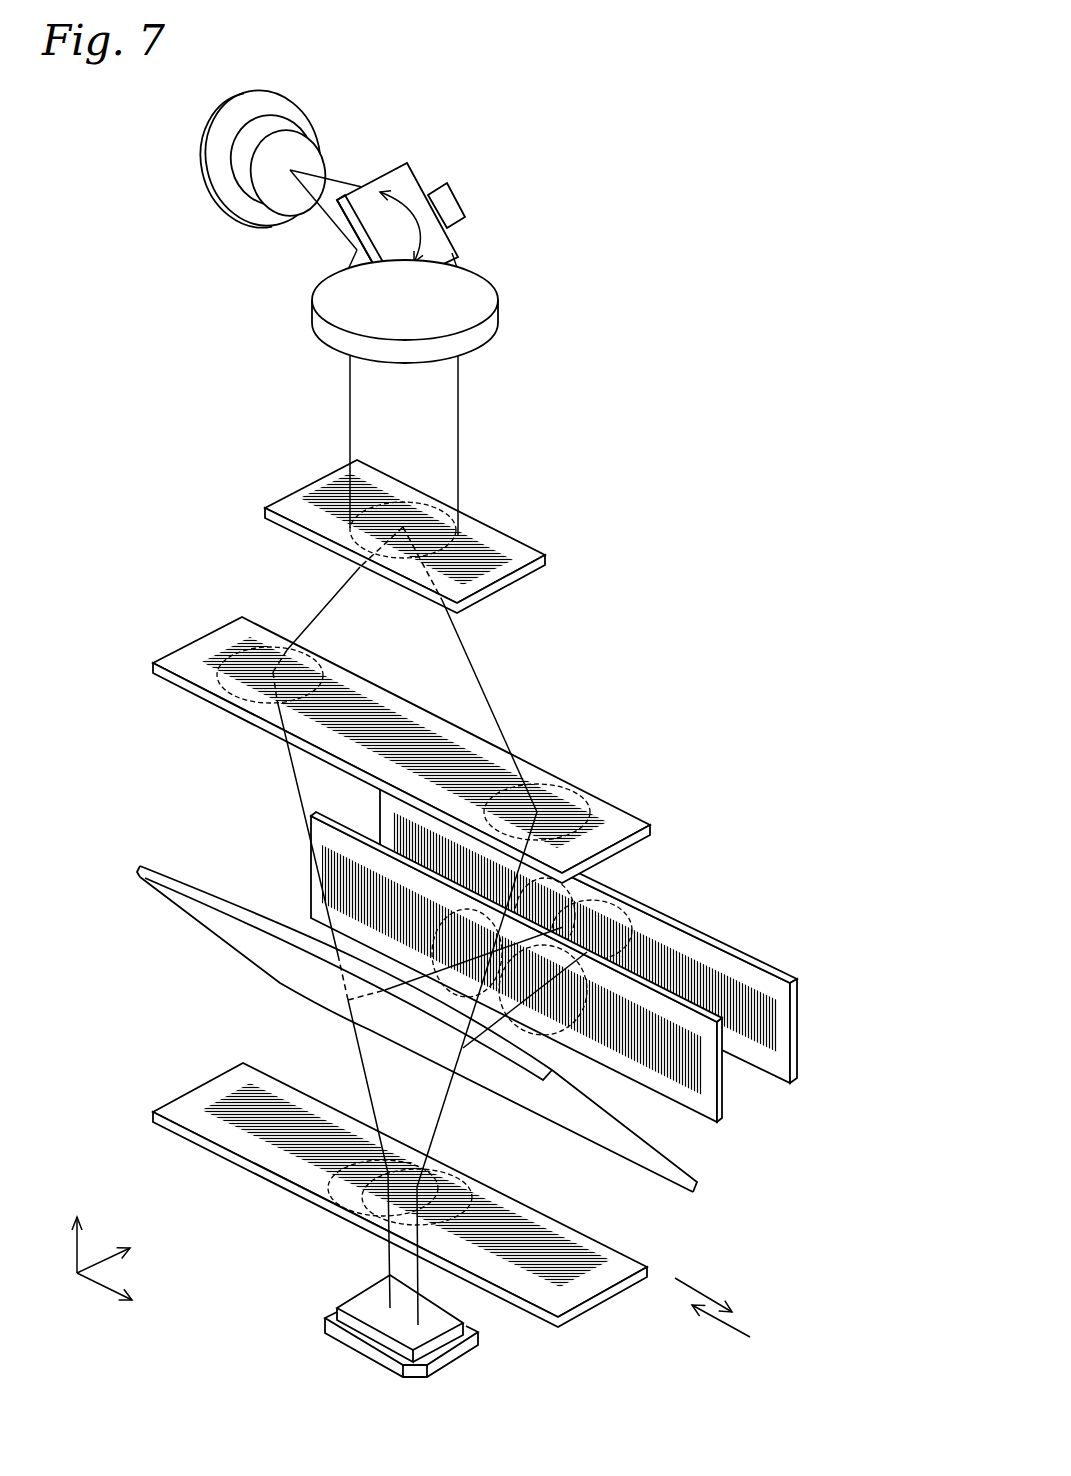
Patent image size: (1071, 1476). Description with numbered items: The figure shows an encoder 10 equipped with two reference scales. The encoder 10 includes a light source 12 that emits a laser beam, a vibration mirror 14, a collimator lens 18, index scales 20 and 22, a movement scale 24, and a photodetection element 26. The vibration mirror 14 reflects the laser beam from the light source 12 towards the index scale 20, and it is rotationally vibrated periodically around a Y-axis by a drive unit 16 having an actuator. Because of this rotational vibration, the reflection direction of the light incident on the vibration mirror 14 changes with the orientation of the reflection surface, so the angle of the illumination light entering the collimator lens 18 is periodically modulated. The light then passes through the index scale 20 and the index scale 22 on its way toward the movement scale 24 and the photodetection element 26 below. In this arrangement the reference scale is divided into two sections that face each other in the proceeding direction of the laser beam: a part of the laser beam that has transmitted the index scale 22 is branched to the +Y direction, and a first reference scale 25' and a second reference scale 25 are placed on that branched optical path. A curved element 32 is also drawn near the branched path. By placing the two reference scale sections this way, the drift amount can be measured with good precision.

The encoder 10 is at (630, 205).
The light source 12 is at (287, 102).
The vibration mirror 14 is at (408, 177).
The drive unit 16 is at (453, 193).
The collimator lens 18 is at (490, 297).
The index scale 20 is at (527, 555).
The index scale 22 is at (632, 823).
The movement scale 24 is at (597, 1303).
The second reference scale 25 is at (627, 973).
The first reference scale 25' is at (557, 1009).
The photodetection element 26 is at (350, 1300).
The curved reflector 32 is at (697, 1185).